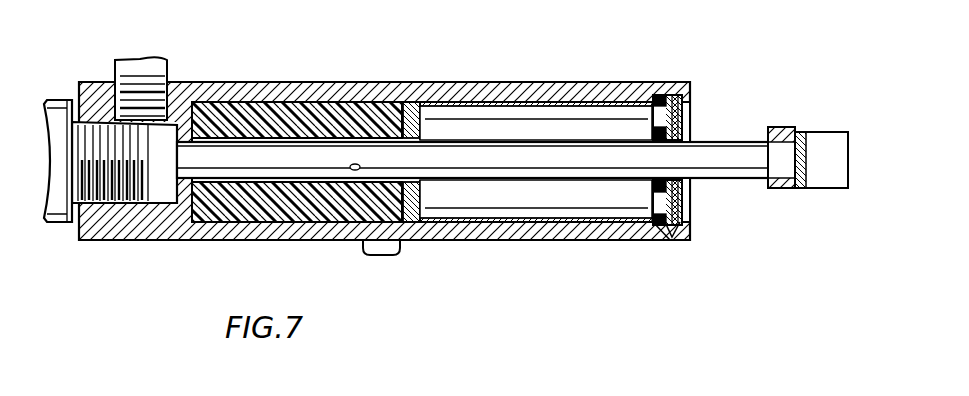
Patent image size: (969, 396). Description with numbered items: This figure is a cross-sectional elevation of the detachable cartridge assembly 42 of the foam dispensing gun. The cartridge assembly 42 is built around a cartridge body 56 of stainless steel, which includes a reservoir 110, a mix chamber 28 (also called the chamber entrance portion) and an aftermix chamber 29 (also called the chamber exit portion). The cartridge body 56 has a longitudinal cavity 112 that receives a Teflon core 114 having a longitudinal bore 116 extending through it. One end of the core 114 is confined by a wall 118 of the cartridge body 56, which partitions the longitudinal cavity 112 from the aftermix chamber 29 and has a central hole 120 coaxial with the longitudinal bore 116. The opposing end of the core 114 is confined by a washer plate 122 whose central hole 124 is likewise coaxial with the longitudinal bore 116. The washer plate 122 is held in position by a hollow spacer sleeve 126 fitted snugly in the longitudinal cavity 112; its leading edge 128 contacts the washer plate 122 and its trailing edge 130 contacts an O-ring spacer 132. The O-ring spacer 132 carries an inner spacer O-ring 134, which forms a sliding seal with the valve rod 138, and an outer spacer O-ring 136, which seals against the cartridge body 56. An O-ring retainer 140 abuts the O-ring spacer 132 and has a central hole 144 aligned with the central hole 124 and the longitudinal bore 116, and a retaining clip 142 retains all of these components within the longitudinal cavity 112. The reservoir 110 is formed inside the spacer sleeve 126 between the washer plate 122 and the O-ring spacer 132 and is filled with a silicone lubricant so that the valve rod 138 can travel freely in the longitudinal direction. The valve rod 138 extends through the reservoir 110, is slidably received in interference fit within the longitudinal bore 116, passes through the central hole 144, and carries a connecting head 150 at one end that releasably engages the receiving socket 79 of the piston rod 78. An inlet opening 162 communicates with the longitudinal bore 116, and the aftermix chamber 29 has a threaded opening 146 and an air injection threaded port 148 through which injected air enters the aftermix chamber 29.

The mix chamber 28 is at (307, 92).
The aftermix chamber 29 is at (167, 192).
The cartridge assembly 42 is at (472, 58).
The cartridge body 56 is at (533, 82).
The piston rod 78 is at (835, 130).
The receiving socket 79 is at (790, 183).
The reservoir 110 is at (600, 90).
The longitudinal cavity 112 is at (296, 222).
The core 114 is at (247, 92).
The longitudinal bore 116 is at (402, 92).
The wall 118 is at (204, 214).
The central hole 120 is at (185, 92).
The washer plate 122 is at (425, 92).
The central hole 124 is at (440, 182).
The spacer sleeve 126 is at (640, 88).
The leading edge 128 is at (415, 240).
The trailing edge 130 is at (660, 228).
The O-ring spacer 132 is at (663, 98).
The inner spacer O-ring 134 is at (688, 135).
The outer spacer O-ring 136 is at (672, 238).
The valve rod 138 is at (748, 182).
The O-ring retainer 140 is at (682, 117).
The retaining clip 142 is at (688, 100).
The central hole 144 is at (678, 172).
The threaded opening 146 is at (80, 114).
The air injection threaded port 148 is at (118, 83).
The connecting head 150 is at (793, 130).
The inlet opening 162 is at (357, 164).